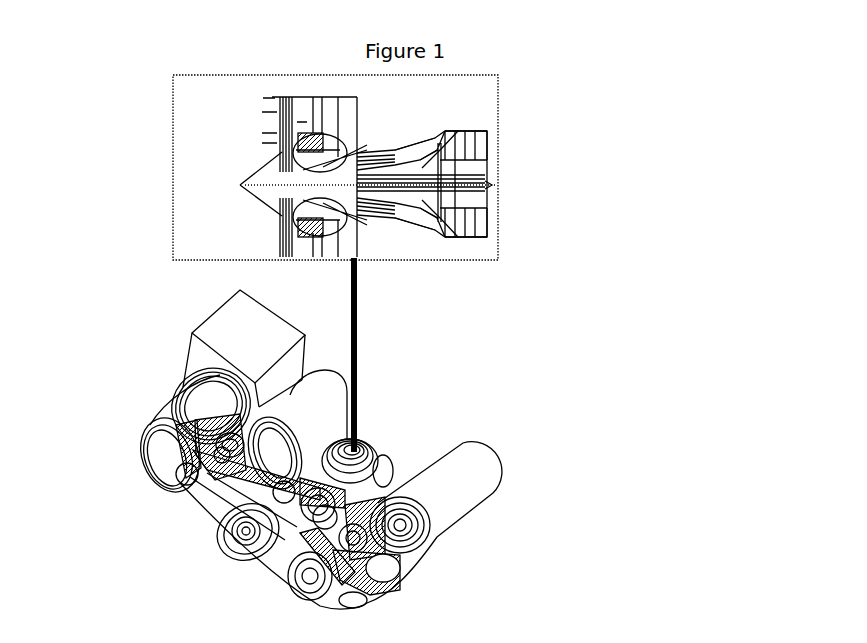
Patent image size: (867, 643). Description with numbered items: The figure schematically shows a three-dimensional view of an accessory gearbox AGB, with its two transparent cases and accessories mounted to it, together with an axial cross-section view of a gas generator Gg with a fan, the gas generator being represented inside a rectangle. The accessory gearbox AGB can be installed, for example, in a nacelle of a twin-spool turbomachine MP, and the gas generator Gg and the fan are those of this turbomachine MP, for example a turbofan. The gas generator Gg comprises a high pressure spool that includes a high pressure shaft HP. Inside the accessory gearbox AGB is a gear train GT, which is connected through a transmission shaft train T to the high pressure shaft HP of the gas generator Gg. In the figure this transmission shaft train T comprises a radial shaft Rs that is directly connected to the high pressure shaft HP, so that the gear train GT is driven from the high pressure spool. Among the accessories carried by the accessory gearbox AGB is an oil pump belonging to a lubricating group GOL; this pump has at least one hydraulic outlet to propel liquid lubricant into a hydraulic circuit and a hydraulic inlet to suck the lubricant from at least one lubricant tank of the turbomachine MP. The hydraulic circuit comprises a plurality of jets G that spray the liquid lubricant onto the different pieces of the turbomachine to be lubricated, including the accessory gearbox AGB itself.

The transmission shaft train T is at (318, 290).
The gas generator Gg is at (154, 200).
The high pressure shaft HP is at (395, 167).
The radial shaft Rs is at (357, 320).
The twin-spool turbomachine MP is at (640, 311).
The accessory gearbox AGB is at (432, 384).
The lubricating group GOL is at (244, 348).
The gear train GT is at (171, 393).
The jets G is at (224, 448).